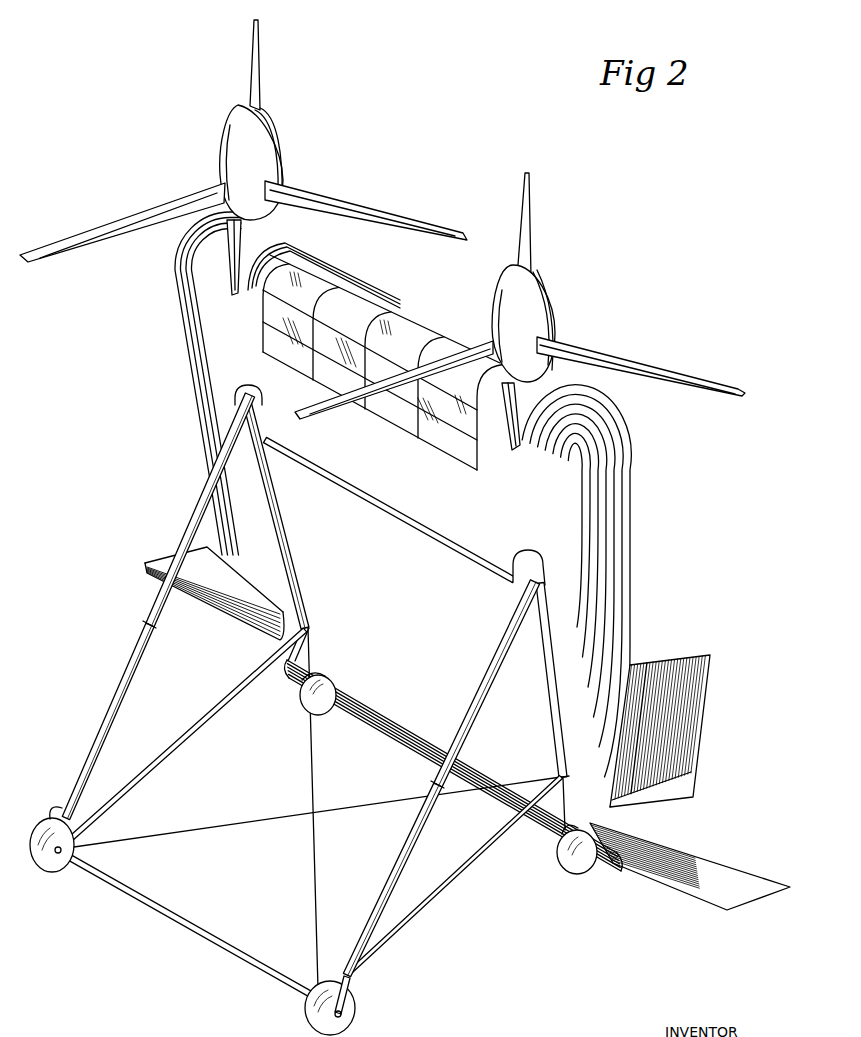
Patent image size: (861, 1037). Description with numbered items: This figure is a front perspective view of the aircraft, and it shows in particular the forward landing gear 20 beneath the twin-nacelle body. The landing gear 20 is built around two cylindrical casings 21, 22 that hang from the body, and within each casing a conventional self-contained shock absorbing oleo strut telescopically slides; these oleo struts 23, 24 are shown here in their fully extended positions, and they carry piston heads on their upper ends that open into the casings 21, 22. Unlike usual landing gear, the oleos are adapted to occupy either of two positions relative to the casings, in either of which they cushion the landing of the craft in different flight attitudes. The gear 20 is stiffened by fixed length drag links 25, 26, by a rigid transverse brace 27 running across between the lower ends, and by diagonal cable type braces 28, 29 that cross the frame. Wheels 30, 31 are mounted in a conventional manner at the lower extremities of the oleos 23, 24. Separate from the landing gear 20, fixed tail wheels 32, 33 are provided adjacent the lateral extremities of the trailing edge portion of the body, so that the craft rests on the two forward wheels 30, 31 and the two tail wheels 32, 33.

The forward landing gear 20 is at (126, 662).
The cylindrical casing 21 is at (178, 603).
The cylindrical casing 22 is at (483, 727).
The oleo strut 23 is at (125, 714).
The oleo strut 24 is at (405, 868).
The drag link 25 is at (197, 735).
The drag link 26 is at (418, 915).
The transverse brace 27 is at (188, 940).
The diagonal cable brace 28 is at (222, 828).
The diagonal cable brace 29 is at (315, 905).
The wheel 30 is at (358, 1003).
The wheel 31 is at (40, 875).
The fixed tail wheel 32 is at (302, 703).
The fixed tail wheel 33 is at (571, 870).